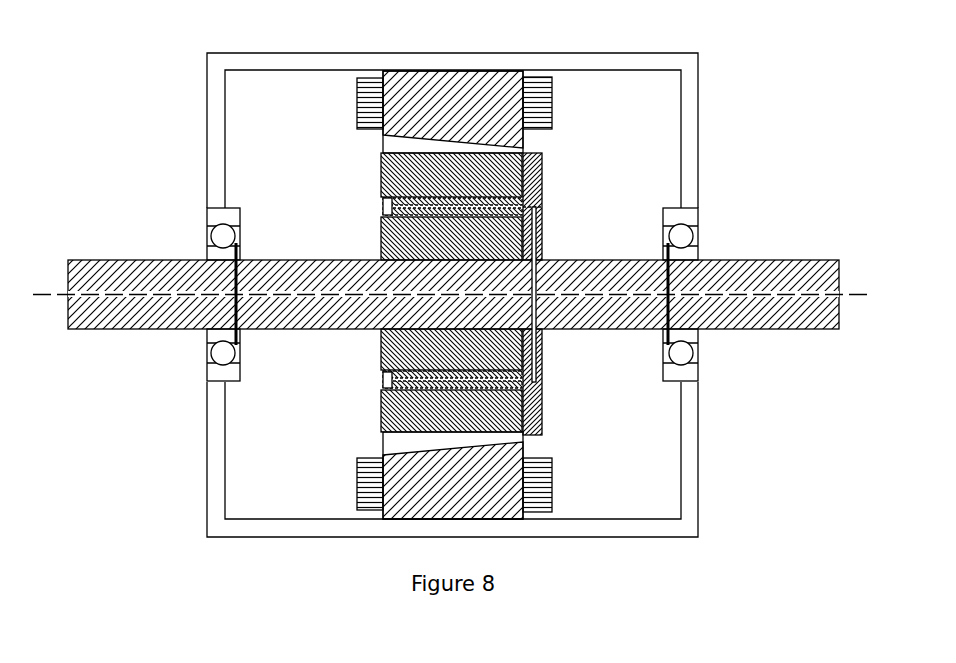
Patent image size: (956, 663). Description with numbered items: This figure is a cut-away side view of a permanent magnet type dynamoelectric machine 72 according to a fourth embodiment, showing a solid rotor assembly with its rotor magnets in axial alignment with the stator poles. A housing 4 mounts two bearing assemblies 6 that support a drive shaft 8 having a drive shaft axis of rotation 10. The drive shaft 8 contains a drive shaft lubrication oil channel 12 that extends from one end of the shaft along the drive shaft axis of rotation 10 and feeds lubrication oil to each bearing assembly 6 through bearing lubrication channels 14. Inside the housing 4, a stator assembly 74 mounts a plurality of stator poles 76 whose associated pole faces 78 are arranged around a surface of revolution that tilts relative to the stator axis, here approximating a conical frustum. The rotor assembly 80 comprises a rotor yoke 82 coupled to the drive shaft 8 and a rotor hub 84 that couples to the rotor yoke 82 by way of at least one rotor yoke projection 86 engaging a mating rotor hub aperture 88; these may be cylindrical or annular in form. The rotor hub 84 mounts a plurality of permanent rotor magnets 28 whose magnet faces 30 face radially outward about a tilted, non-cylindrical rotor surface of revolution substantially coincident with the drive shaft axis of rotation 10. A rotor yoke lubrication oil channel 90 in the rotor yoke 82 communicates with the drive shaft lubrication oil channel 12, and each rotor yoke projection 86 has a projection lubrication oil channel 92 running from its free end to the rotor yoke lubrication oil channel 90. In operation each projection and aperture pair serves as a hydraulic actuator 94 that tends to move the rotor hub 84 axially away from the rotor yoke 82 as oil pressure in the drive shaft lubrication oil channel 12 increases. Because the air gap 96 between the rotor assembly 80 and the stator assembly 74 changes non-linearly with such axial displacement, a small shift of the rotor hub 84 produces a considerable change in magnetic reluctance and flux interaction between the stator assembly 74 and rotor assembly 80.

The housing 4 is at (643, 71).
The bearing assembly 6 is at (207, 215).
The drive shaft 8 is at (767, 259).
The drive shaft axis of rotation 10 is at (50, 296).
The drive shaft lubrication oil channel 12 is at (839, 291).
The bearing lubrication channel 14 is at (240, 250).
The permanent rotor magnet 28 is at (401, 137).
The magnet face 30 is at (488, 150).
The dynamoelectric machine 72 is at (135, 122).
The stator assembly 74 is at (381, 71).
The stator pole 76 is at (545, 78).
The pole face 78 is at (390, 157).
The rotor assembly 80 is at (545, 383).
The rotor yoke 82 is at (542, 243).
The rotor hub 84 is at (378, 350).
The rotor yoke projection 86 is at (383, 213).
The rotor hub aperture 88 is at (389, 197).
The rotor yoke lubrication oil channel 90 is at (536, 280).
The projection lubrication oil channel 92 is at (443, 200).
The hydraulic actuator 94 is at (542, 198).
The air gap 96 is at (420, 143).